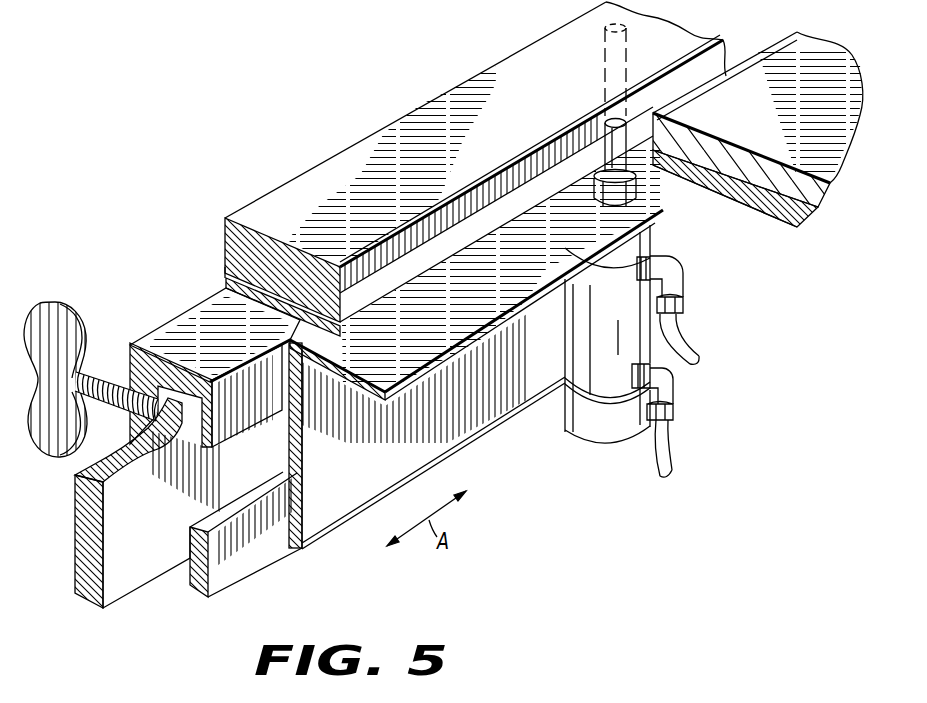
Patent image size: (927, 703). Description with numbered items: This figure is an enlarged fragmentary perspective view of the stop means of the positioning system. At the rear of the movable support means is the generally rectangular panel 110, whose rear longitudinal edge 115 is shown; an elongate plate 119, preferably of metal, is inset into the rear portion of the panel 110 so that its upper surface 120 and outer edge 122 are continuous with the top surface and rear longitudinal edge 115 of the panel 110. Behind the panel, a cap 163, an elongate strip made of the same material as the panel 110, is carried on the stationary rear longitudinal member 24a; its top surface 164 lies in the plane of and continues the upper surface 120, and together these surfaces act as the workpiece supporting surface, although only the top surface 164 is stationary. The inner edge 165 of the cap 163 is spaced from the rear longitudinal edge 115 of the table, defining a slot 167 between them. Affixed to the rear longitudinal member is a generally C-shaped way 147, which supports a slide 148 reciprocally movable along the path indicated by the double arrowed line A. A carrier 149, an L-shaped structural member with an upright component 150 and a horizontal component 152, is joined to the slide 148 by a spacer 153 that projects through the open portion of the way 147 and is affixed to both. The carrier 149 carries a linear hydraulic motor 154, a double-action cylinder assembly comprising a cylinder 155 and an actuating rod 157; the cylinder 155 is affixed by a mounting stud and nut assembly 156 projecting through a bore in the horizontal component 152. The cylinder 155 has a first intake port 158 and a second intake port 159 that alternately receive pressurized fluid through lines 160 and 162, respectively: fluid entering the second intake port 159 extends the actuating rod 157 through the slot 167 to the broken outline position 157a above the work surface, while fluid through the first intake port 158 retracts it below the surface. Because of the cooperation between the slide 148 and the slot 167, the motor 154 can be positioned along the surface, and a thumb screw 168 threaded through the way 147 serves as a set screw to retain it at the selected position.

The cap 163 is at (316, 164).
The top surface 164 is at (382, 140).
The inner edge 165 is at (461, 226).
The rear longitudinal member 24a is at (224, 282).
The way 147 is at (164, 326).
The thumb screw 168 is at (37, 306).
The spacer 153 is at (287, 447).
The slide 148 is at (137, 590).
The horizontal component 152 is at (476, 310).
The carrier 149 is at (436, 456).
The upright component 150 is at (328, 522).
The linear hydraulic motor 154 is at (602, 440).
The cylinder 155 is at (568, 412).
The first intake port 158 is at (664, 253).
The second intake port 159 is at (661, 362).
The line 160 is at (683, 340).
The line 162 is at (669, 450).
The actuating rod 157 is at (600, 130).
The broken outline position 157a is at (600, 48).
The mounting stud and nut assembly 156 is at (597, 208).
The outer edge 122 is at (645, 110).
The slot 167 is at (700, 64).
The elongate plate 119 is at (803, 47).
The upper surface 120 is at (840, 83).
The rear longitudinal edge 115 is at (682, 185).
The panel 110 is at (762, 223).